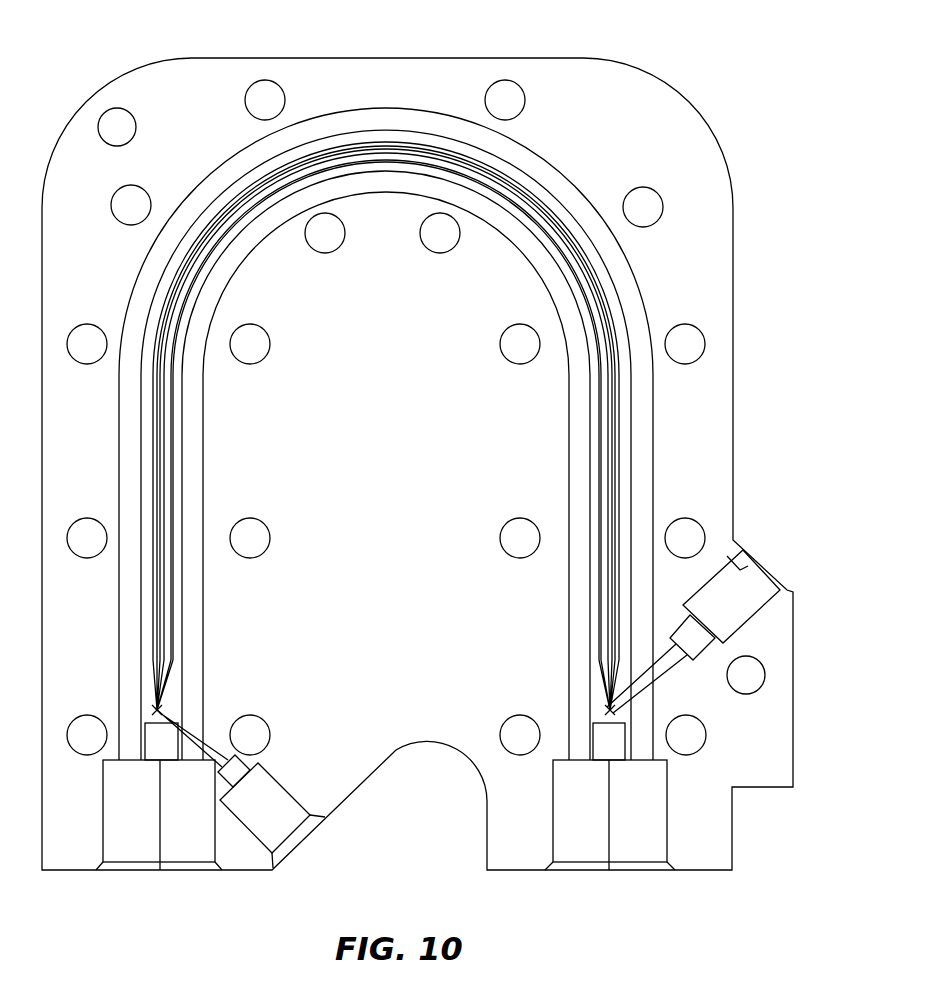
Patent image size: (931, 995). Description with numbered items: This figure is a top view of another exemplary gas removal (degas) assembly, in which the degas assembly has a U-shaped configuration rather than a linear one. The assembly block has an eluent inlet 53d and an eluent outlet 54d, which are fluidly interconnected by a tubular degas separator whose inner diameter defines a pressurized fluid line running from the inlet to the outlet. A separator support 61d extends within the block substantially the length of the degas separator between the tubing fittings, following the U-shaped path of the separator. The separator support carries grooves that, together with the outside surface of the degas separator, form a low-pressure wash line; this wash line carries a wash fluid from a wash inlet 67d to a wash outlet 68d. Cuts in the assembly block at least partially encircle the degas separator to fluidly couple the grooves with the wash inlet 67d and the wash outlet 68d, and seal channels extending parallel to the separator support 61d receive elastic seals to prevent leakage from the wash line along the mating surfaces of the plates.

The separator support 61d is at (535, 193).
The eluent inlet 53d is at (106, 848).
The eluent outlet 54d is at (552, 848).
The wash outlet 68d is at (300, 814).
The wash inlet 67d is at (725, 575).